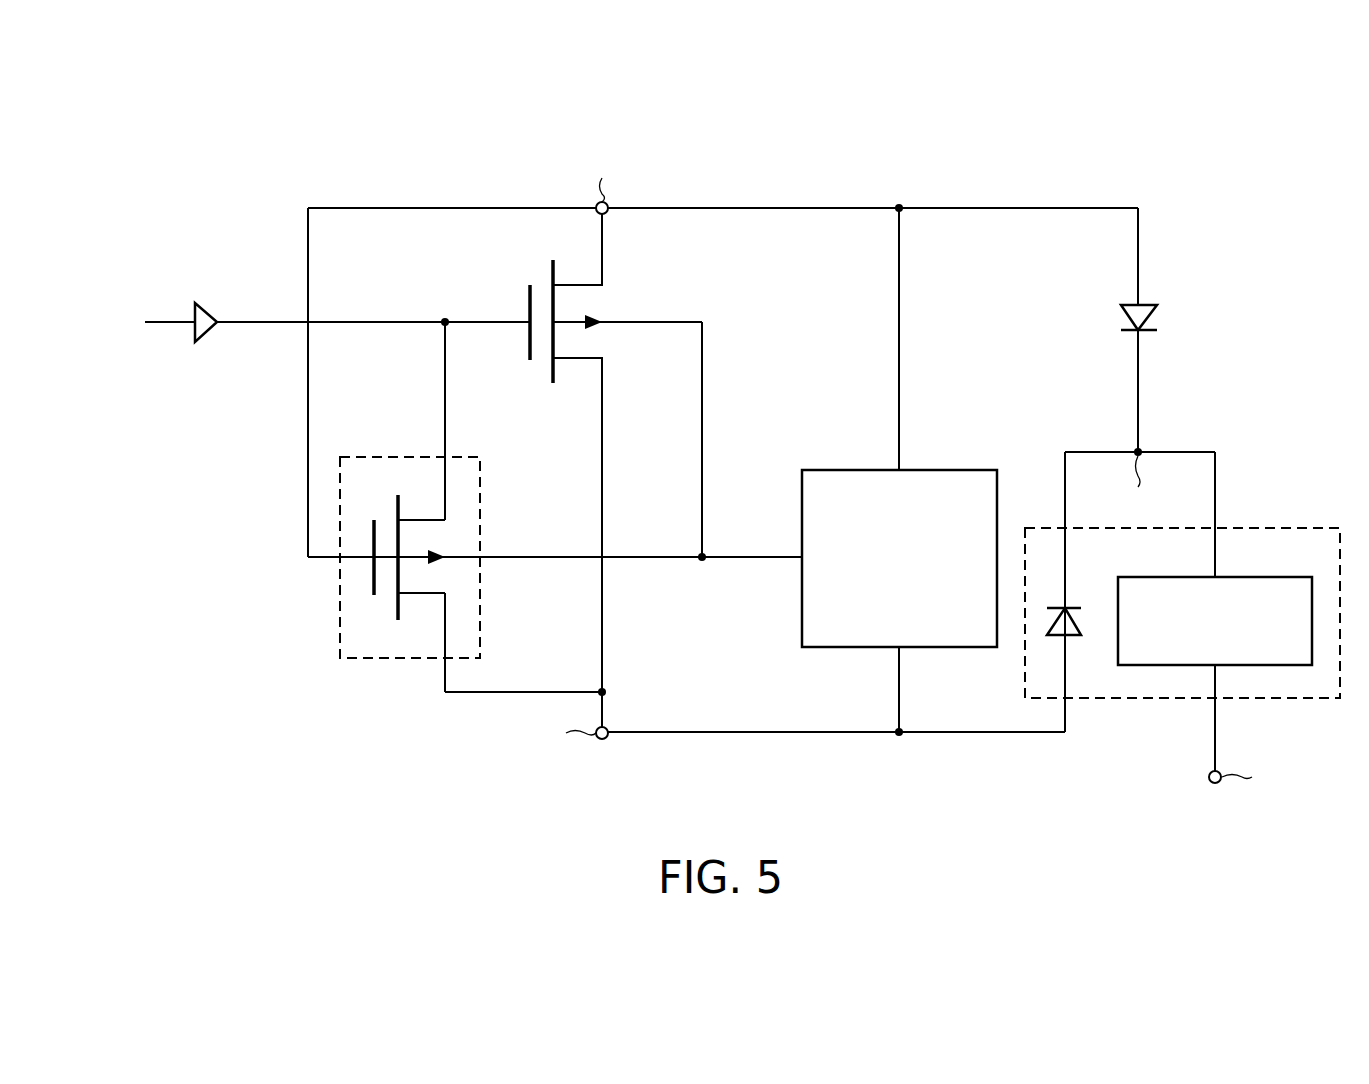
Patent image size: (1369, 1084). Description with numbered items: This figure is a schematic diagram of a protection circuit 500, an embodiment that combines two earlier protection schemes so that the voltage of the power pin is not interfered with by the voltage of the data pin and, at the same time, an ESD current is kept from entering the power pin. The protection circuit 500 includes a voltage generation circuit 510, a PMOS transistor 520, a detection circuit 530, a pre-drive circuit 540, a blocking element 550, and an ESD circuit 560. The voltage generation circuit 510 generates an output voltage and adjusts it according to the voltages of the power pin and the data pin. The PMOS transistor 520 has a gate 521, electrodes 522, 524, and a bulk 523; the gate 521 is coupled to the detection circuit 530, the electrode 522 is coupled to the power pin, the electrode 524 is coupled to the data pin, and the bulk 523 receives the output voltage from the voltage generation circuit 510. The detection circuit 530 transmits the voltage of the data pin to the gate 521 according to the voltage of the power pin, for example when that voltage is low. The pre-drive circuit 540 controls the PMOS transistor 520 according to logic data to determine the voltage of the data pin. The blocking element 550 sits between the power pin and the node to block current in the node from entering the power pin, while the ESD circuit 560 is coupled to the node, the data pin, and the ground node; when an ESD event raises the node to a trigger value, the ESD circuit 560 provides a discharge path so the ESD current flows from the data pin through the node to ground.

The protection circuit 500 is at (1327, 132).
The voltage generation circuit 510 is at (803, 469).
The PMOS transistor 520 is at (542, 284).
The gate 521 is at (503, 325).
The electrode 522 is at (605, 255).
The bulk 523 is at (615, 318).
The electrode 524 is at (605, 385).
The detection circuit 530 is at (341, 456).
The pre-drive circuit 540 is at (207, 310).
The blocking element 550 is at (1158, 318).
The ESD circuit 560 is at (1255, 527).